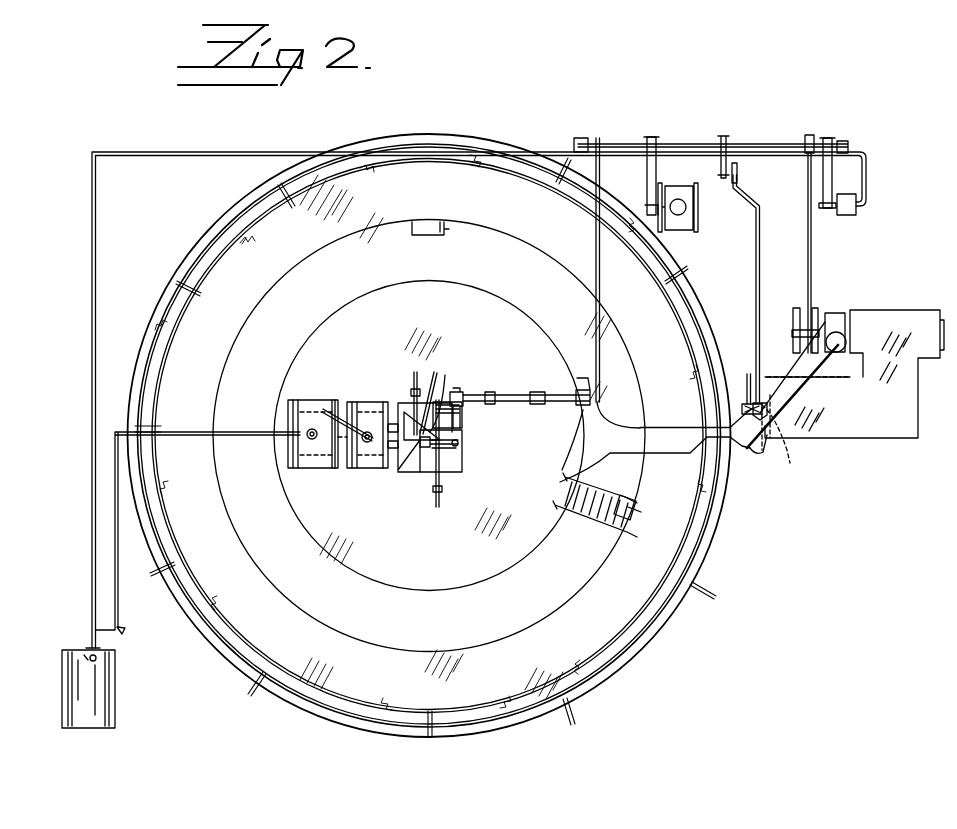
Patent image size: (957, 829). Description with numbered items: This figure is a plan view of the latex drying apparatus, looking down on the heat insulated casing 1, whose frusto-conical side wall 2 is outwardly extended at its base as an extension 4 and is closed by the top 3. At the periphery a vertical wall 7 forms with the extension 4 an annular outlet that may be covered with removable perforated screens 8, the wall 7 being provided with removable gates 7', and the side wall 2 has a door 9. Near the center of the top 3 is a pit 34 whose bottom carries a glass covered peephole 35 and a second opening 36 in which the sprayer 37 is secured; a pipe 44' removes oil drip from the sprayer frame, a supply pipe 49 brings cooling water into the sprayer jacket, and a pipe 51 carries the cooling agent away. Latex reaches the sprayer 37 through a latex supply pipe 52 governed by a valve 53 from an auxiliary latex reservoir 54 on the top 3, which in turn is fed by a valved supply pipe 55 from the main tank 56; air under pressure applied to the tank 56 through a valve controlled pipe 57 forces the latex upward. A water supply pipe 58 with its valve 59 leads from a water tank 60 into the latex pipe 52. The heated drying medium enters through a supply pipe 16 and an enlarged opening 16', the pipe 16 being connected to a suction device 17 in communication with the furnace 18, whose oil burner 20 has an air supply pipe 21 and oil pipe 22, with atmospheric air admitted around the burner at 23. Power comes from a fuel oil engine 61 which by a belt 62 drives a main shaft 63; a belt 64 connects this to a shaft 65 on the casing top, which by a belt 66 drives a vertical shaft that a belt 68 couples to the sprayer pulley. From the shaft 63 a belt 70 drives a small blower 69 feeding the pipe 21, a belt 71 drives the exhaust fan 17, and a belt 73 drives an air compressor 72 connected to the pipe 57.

The heat insulated casing 1 is at (226, 394).
The frusto-conical side wall 2 is at (222, 460).
The top 3 is at (429, 436).
The extension 4 is at (202, 542).
The vertical wall 7 is at (154, 285).
The removable gates 7' is at (726, 520).
The removable perforated screens 8 is at (240, 214).
The door 9 is at (410, 236).
The supply pipe 16 is at (653, 472).
The enlarged opening 16' is at (601, 428).
The suction device 17 is at (833, 312).
The furnace 18 is at (862, 438).
The oil burner 20 is at (754, 450).
The air supply pipe 21 is at (755, 297).
The oil pipe 22 is at (745, 375).
The atmospheric air supply 23 is at (785, 440).
The pit 34 is at (452, 472).
The glass covered peephole 35 is at (463, 446).
The second opening 36 is at (445, 393).
The sprayer 37 is at (455, 455).
The pipe 44' is at (445, 385).
The supply pipe for cooling agent 49 is at (432, 486).
The pipe 51 is at (413, 376).
The latex supply pipe 52 is at (425, 439).
The valve 53 is at (393, 449).
The auxiliary latex reservoir 54 is at (315, 470).
The valved supply pipe 55 is at (246, 438).
The main tank 56 is at (105, 688).
The valve controlled pipe 57 is at (459, 400).
The water supply pipe 58 is at (410, 392).
The valve 59 is at (392, 426).
The water tank 60 is at (360, 470).
The fuel oil engine 61 is at (686, 225).
The belt 62 is at (647, 178).
The main shaft 63 is at (678, 143).
The belt 64 is at (596, 248).
The shaft 65 is at (518, 394).
The belt 66 is at (465, 412).
The belt 68 is at (444, 432).
The small blower 69 is at (740, 177).
The belt 70 is at (720, 173).
The belt 71 is at (812, 249).
The air compressor 72 is at (846, 215).
The belt 73 is at (833, 183).